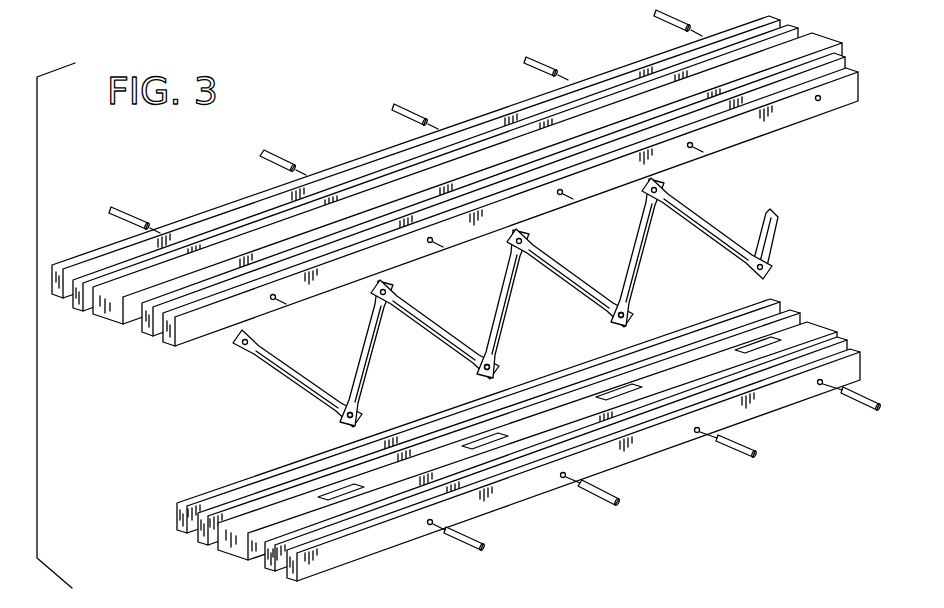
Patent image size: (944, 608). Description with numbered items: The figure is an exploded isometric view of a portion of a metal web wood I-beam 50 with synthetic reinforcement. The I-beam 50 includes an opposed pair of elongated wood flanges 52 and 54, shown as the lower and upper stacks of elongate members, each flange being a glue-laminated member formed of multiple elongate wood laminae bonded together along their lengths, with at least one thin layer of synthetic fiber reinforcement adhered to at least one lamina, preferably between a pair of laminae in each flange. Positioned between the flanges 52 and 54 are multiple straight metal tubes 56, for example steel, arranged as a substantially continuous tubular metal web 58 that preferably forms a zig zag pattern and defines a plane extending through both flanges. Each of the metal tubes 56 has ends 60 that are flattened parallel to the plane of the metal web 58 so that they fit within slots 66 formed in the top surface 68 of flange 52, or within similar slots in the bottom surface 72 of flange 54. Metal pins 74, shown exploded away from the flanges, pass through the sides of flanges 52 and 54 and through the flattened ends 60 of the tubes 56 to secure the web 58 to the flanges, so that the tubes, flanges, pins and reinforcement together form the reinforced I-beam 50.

The metal web wood I-beam 50 is at (474, 305).
The wood flange 52 is at (497, 430).
The wood flange 54 is at (461, 212).
The metal tubes 56 is at (546, 302).
The tubular metal web 58 is at (779, 240).
The flattened ends 60 is at (343, 421).
The slots 66 is at (356, 486).
The top surface 68 is at (238, 524).
The bottom surface 72 is at (100, 318).
The metal pins 74 is at (283, 166).